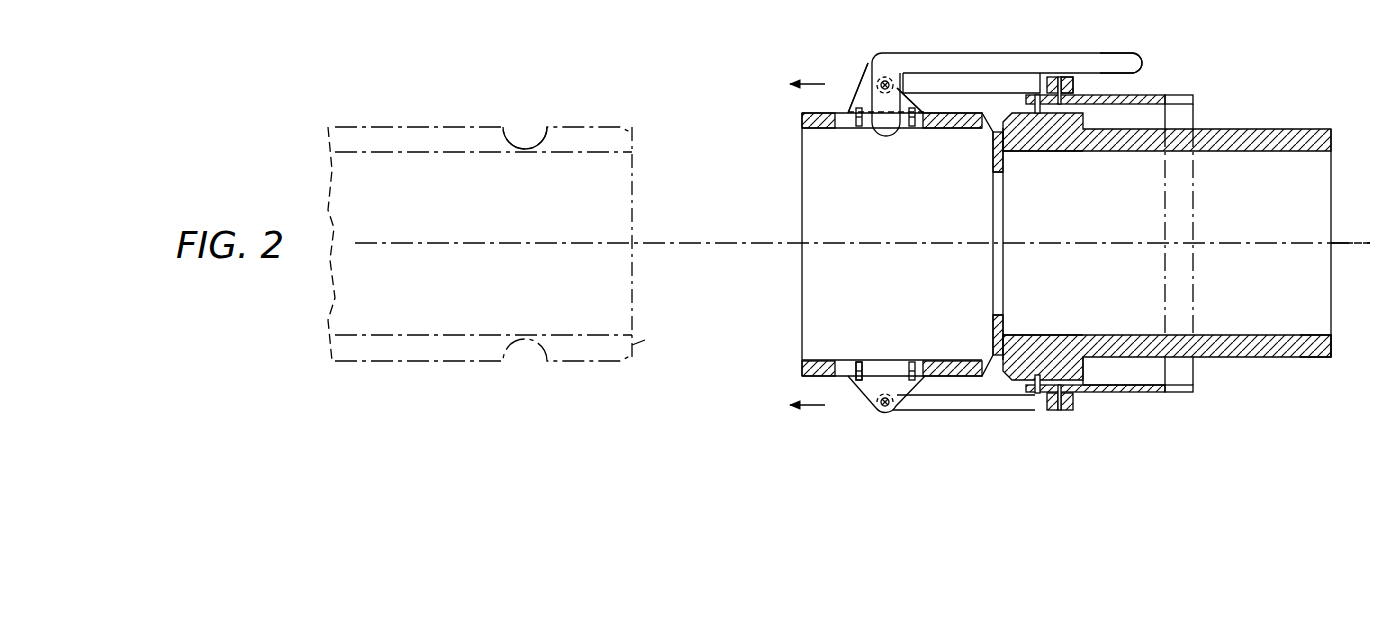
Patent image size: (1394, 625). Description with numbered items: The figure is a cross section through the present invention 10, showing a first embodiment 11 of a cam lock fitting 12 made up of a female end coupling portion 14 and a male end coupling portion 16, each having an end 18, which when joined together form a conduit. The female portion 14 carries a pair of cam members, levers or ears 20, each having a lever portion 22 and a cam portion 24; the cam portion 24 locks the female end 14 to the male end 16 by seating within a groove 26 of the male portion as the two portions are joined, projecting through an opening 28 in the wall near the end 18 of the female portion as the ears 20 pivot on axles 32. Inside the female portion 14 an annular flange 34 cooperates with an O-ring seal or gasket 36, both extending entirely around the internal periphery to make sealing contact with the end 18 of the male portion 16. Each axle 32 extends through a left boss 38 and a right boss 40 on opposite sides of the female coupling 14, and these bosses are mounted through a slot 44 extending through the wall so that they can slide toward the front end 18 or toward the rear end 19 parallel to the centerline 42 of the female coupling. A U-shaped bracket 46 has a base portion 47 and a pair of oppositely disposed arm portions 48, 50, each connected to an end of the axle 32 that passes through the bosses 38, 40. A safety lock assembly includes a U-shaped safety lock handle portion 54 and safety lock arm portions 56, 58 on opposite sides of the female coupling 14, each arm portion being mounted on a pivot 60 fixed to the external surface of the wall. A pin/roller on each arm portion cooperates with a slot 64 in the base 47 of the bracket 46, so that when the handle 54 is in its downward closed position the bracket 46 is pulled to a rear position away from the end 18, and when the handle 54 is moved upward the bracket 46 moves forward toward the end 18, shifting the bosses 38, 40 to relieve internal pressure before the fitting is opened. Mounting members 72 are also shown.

The present invention 10 is at (1310, 83).
The first embodiment 11 is at (1207, 32).
The cam lock fitting 12 is at (792, 143).
The female end coupling portion 14 is at (1237, 127).
The male end coupling portion 16 is at (462, 122).
The end 18 is at (800, 365).
The rear end 19 is at (1333, 345).
The cam member, lever or ear 20 is at (1136, 54).
The lever portion 22 is at (925, 57).
The cam portion 24 is at (882, 140).
The groove 26 is at (523, 134).
The opening 28 is at (917, 128).
The axle 32 is at (881, 80).
The annular flange 34 is at (1027, 153).
The O-ring seal or gasket 36 is at (993, 332).
The left boss 38 is at (858, 95).
The right boss 40 is at (860, 402).
The centerline 42 is at (1343, 243).
The slot 44 is at (850, 370).
The U-shaped bracket 46 is at (1072, 396).
The base portion 47 is at (1075, 86).
The arm portion 48 is at (943, 400).
The arm portion 50 is at (948, 86).
The U-shaped safety lock handle portion 54 is at (1193, 368).
The safety lock arm portion 56 is at (1152, 94).
The safety lock arm portion 58 is at (1140, 393).
The pivot 60 is at (1038, 95).
The slot 64 is at (1059, 80).
The mounting members 72 is at (858, 128).